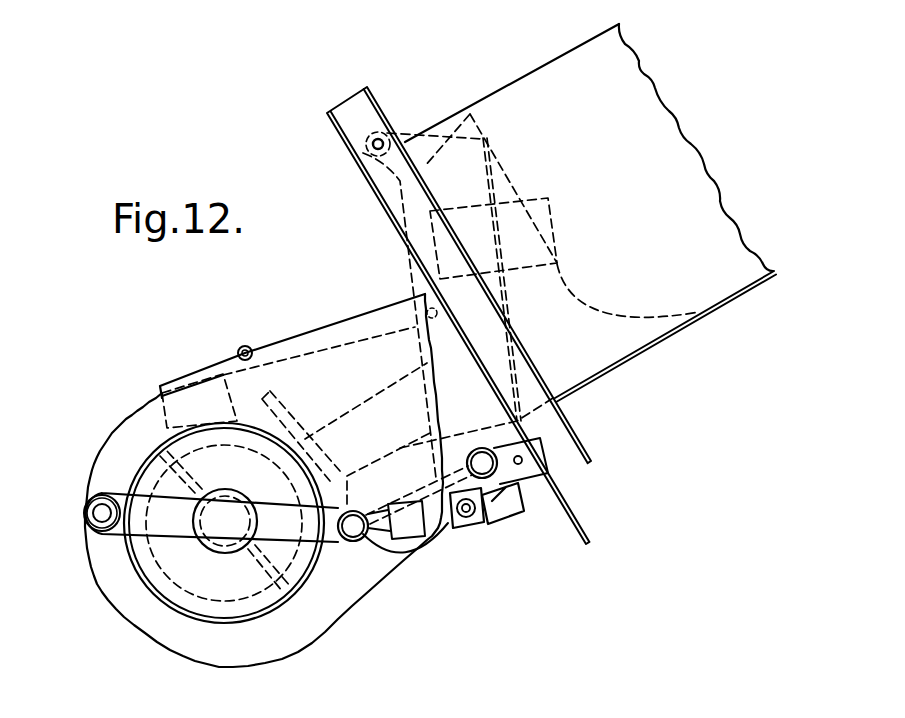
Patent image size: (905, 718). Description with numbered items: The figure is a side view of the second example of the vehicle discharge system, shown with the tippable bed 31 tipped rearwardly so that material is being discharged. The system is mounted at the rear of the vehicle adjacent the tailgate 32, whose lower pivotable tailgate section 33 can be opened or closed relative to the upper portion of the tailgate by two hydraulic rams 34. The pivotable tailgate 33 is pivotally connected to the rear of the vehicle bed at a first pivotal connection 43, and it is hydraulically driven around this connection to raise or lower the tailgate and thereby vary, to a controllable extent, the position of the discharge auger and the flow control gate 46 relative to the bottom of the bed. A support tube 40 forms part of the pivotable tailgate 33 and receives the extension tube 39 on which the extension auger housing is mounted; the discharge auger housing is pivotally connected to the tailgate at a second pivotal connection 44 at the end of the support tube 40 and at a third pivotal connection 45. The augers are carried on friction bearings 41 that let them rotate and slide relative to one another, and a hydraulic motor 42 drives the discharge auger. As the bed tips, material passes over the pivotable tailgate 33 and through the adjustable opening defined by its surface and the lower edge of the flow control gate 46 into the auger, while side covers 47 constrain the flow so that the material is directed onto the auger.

The tippable bed 31 is at (673, 326).
The tailgate 32 is at (364, 223).
The pivotable tailgate section 33 is at (284, 480).
The hydraulic rams 34 is at (500, 501).
The extension tube 39 is at (374, 548).
The support tube 40 is at (343, 535).
The friction bearings 41 is at (142, 445).
The hydraulic motor 42 is at (209, 532).
The first pivotal connection 43 is at (475, 454).
The second pivotal connection 44 is at (415, 545).
The third pivotal connection 45 is at (239, 339).
The flow control gate 46 is at (312, 418).
The side covers 47 is at (314, 345).